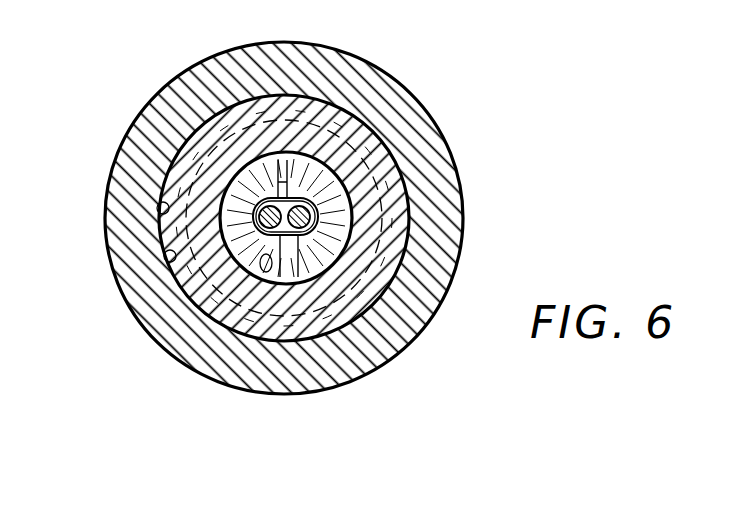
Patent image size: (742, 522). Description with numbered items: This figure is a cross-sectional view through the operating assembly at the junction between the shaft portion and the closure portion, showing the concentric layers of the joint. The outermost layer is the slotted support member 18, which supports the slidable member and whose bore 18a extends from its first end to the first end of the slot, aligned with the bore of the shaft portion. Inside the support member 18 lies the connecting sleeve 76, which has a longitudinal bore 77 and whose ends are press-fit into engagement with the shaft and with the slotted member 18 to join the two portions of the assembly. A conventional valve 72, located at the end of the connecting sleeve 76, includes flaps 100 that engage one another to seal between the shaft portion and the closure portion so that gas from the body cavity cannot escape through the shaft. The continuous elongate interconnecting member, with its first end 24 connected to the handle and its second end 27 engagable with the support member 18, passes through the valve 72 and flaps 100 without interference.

The support member 18 is at (450, 140).
The bore 18a is at (157, 207).
The first end 24 is at (178, 77).
The second end 27 is at (362, 110).
The valve 72 is at (172, 258).
The connecting sleeve 76 is at (182, 180).
The longitudinal bore 77 is at (200, 320).
The flaps 100 is at (373, 248).